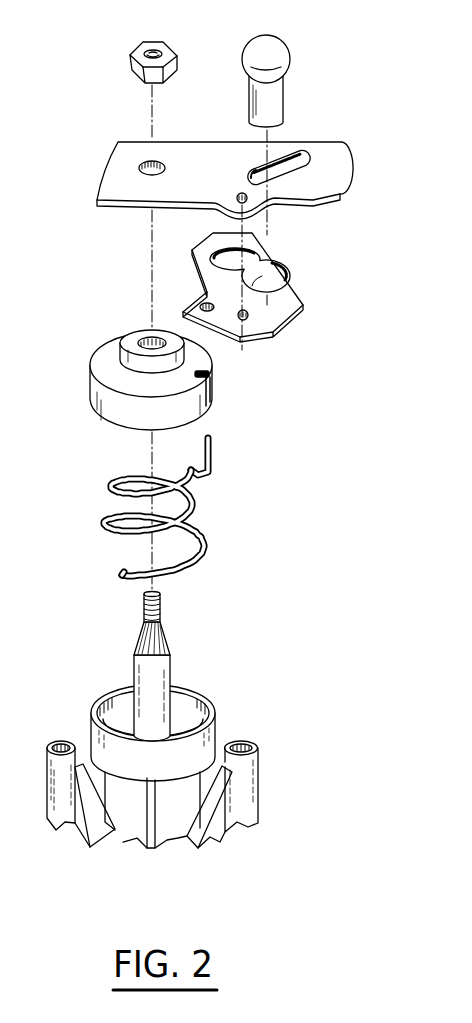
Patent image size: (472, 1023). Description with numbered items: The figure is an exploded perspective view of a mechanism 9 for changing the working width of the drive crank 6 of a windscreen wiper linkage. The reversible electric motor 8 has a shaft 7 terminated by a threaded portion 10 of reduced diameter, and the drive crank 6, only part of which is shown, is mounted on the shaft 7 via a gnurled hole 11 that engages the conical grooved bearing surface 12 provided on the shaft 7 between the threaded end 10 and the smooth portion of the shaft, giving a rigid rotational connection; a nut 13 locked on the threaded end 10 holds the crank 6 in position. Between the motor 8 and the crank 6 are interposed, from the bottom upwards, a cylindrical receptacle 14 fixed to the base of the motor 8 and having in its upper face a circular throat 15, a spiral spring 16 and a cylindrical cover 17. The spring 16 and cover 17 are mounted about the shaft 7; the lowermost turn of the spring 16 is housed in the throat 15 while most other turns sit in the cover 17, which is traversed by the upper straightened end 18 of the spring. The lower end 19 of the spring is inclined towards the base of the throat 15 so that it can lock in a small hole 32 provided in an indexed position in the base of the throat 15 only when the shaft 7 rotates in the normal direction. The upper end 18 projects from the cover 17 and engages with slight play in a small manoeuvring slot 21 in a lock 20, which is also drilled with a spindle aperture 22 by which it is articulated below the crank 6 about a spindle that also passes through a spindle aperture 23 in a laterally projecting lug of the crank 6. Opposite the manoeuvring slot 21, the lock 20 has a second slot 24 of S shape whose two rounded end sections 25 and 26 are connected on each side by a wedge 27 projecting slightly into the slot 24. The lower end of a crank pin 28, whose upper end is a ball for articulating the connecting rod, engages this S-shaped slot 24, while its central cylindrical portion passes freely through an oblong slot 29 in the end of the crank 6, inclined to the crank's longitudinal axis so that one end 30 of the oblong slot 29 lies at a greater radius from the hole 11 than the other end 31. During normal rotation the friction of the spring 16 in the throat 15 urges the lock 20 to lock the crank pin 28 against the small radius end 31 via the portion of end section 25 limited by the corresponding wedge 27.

The drive crank 6 is at (210, 138).
The shaft 7 is at (110, 667).
The reversible electric motor 8 is at (247, 788).
The mechanism for changing the working width 9 is at (108, 295).
The threaded portion 10 is at (145, 607).
The gnurled hole 11 is at (140, 168).
The conical grooved bearing surface 12 is at (135, 638).
The nut 13 is at (137, 53).
The cylindrical receptacle 14 is at (173, 714).
The circular throat 15 is at (217, 700).
The spiral spring 16 is at (161, 522).
The cylindrical cover 17 is at (159, 506).
The upper straightened end 18 is at (213, 452).
The lower end 19 is at (126, 578).
The lock 20 is at (248, 296).
The manoeuvring slot 21 is at (200, 300).
The spindle aperture 22 is at (248, 318).
The spindle aperture 23 is at (240, 197).
The second slot 24 is at (258, 287).
The rounded end section 25 is at (275, 288).
The rounded end section 26 is at (213, 253).
The wedge 27 is at (230, 291).
The crank pin 28 is at (280, 63).
The oblong slot 29 is at (285, 148).
The end of the oblong slot 30 is at (281, 121).
The end of the oblong slot 31 is at (247, 173).
The small hole 32 is at (188, 712).